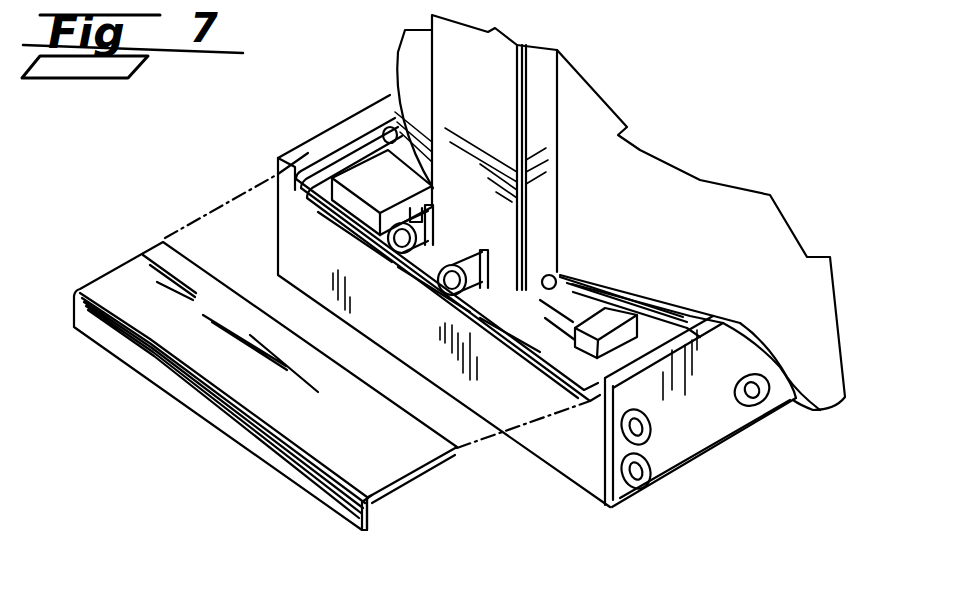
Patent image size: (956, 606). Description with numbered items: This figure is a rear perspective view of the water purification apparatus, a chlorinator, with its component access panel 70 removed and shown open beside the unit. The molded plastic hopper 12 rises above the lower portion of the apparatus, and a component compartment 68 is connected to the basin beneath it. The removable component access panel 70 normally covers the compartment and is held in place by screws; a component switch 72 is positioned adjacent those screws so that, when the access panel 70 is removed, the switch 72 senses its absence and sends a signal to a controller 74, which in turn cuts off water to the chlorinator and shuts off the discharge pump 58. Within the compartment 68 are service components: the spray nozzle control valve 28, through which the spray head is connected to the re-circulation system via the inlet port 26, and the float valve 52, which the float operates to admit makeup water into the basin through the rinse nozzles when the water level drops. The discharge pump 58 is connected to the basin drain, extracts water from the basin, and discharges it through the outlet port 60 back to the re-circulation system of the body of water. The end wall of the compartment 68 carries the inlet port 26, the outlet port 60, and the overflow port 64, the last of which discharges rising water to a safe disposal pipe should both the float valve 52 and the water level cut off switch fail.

The hopper 12 is at (670, 177).
The inlet port 26 is at (622, 434).
The spray nozzle control valve 28 is at (480, 288).
The float valve 52 is at (424, 204).
The discharge pump 58 is at (615, 320).
The outlet port 60 is at (752, 398).
The overflow port 64 is at (604, 497).
The component compartment 68 is at (703, 458).
The component access panel 70 is at (381, 493).
The component switch 72 is at (388, 128).
The controller 74 is at (296, 206).